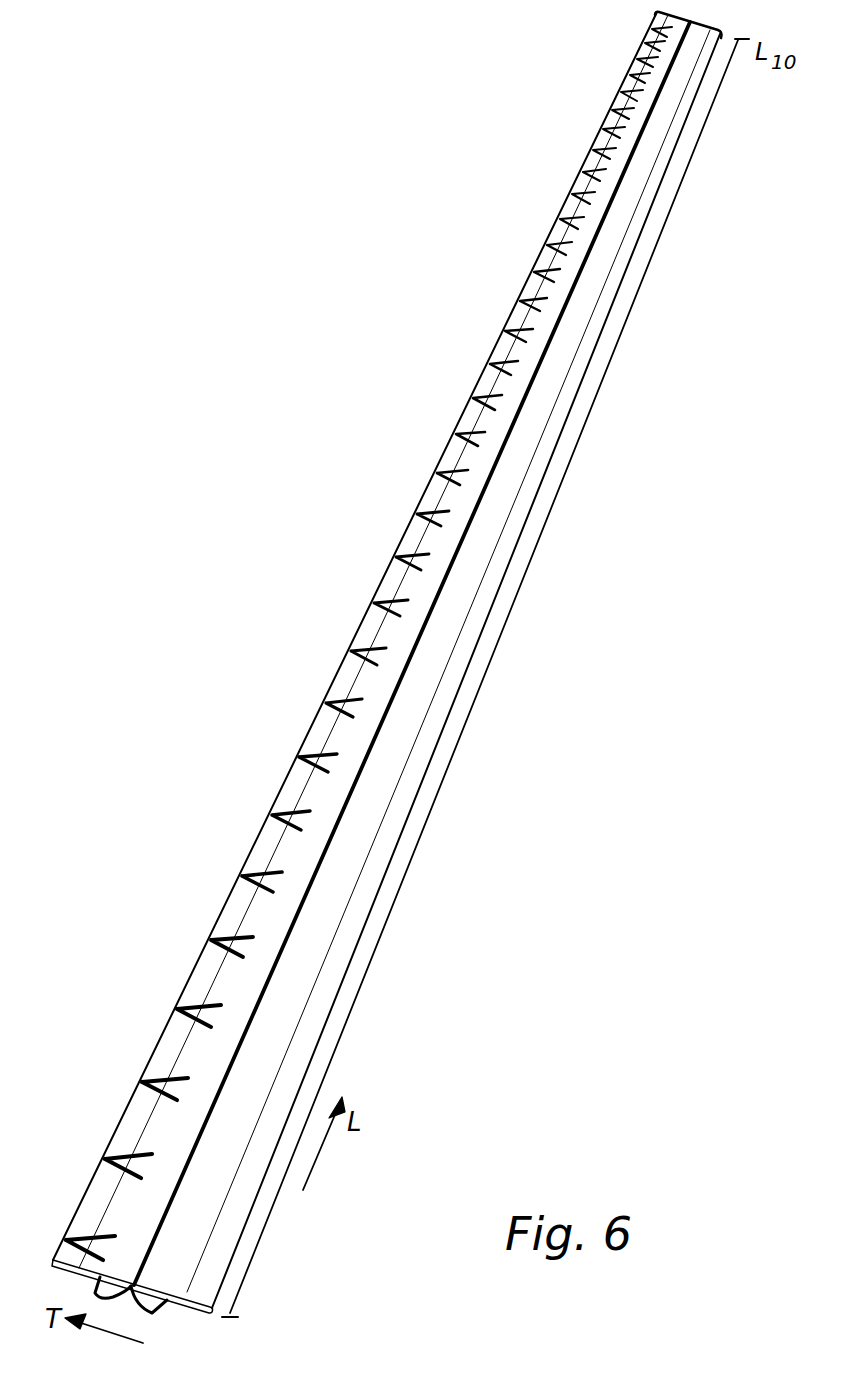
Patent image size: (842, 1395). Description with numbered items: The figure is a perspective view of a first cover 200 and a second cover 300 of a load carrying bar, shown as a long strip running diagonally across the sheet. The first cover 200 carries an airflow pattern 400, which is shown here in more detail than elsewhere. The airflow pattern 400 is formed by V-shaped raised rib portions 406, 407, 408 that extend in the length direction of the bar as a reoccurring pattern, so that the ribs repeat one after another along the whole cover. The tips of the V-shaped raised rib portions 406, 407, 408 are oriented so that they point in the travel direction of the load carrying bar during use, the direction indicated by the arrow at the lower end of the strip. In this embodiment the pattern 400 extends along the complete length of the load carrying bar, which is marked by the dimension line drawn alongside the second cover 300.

The first cover 200 is at (315, 757).
The second cover 300 is at (300, 985).
The airflow pattern 400 is at (176, 1007).
The V-shaped raised rib portion 406 is at (66, 1239).
The V-shaped raised rib portion 407 is at (105, 1158).
The V-shaped raised rib portion 408 is at (142, 1081).